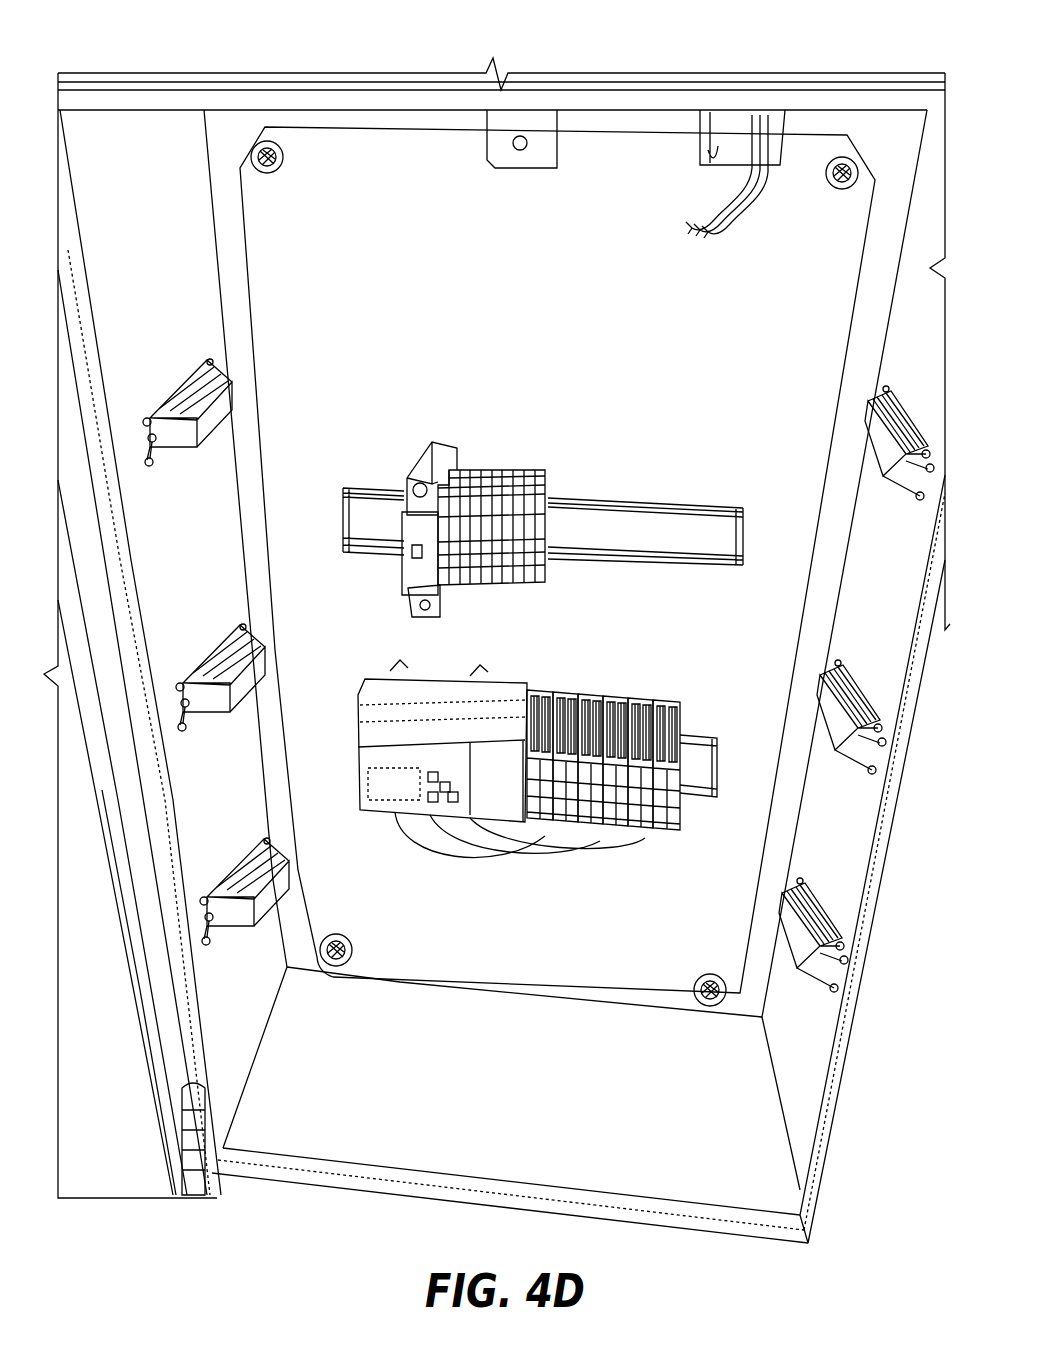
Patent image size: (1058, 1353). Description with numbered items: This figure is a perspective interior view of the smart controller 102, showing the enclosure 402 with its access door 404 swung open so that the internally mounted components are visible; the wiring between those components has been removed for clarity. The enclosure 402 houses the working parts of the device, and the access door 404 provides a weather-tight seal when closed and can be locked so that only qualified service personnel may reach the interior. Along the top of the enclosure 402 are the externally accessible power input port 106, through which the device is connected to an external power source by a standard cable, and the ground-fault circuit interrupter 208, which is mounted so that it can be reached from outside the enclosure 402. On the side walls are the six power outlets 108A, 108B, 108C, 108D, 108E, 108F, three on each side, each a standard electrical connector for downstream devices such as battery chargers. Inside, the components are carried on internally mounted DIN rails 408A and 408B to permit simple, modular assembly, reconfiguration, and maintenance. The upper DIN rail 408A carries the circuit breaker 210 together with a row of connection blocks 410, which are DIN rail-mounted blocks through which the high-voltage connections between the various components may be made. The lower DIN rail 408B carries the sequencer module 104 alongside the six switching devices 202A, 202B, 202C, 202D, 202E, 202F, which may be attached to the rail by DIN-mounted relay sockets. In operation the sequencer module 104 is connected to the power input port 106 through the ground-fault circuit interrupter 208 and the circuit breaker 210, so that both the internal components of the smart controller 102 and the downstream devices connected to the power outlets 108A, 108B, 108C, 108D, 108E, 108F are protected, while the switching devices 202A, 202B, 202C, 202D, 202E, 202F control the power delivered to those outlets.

The smart controller 102 is at (120, 45).
The sequencer module 104 is at (487, 800).
The power input port 106 is at (498, 150).
The power outlet 108A is at (222, 402).
The power outlet 108B is at (250, 676).
The power outlet 108C is at (275, 874).
The power outlet 108D is at (904, 464).
The power outlet 108E is at (850, 746).
The power outlet 108F is at (812, 954).
The switching device 202A is at (540, 815).
The switching device 202B is at (565, 770).
The switching device 202C is at (590, 818).
The switching device 202D is at (615, 770).
The switching device 202E is at (636, 820).
The switching device 202F is at (670, 770).
The ground-fault circuit interrupter 208 is at (710, 150).
The circuit breaker 210 is at (440, 452).
The enclosure 402 is at (555, 267).
The access door 404 is at (84, 1157).
The DIN rail 408A is at (642, 530).
The DIN rail 408B is at (700, 768).
The connection blocks 410 is at (518, 456).